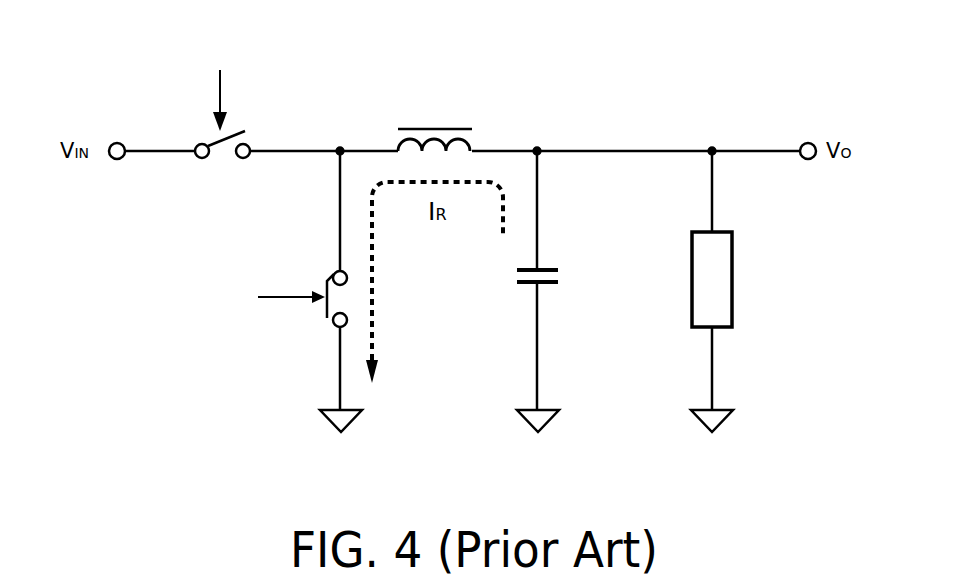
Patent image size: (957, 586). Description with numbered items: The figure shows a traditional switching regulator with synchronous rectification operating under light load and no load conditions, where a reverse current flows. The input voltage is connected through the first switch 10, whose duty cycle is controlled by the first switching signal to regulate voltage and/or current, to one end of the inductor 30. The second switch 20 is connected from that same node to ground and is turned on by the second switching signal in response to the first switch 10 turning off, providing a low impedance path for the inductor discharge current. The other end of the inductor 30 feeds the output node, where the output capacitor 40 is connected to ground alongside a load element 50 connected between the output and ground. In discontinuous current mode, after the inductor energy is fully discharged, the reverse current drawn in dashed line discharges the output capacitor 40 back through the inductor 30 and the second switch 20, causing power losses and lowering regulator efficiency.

The first switch 10 is at (223, 165).
The second switch 20 is at (348, 298).
The inductor 30 is at (442, 122).
The output capacitor 40 is at (563, 277).
The load resistor 50 is at (738, 280).